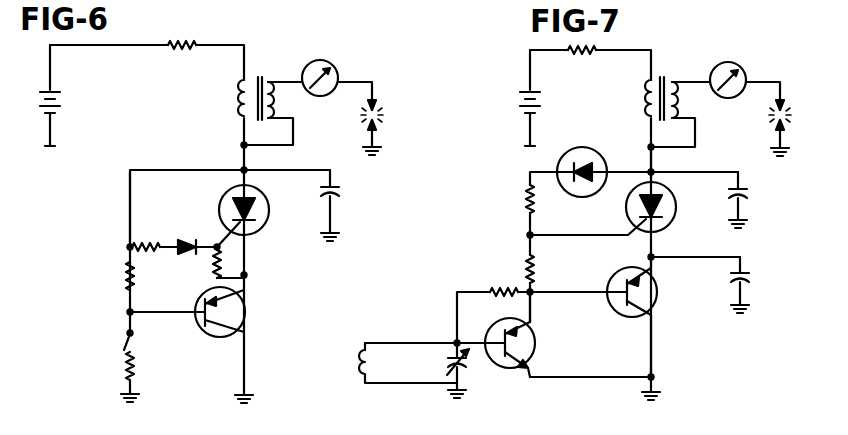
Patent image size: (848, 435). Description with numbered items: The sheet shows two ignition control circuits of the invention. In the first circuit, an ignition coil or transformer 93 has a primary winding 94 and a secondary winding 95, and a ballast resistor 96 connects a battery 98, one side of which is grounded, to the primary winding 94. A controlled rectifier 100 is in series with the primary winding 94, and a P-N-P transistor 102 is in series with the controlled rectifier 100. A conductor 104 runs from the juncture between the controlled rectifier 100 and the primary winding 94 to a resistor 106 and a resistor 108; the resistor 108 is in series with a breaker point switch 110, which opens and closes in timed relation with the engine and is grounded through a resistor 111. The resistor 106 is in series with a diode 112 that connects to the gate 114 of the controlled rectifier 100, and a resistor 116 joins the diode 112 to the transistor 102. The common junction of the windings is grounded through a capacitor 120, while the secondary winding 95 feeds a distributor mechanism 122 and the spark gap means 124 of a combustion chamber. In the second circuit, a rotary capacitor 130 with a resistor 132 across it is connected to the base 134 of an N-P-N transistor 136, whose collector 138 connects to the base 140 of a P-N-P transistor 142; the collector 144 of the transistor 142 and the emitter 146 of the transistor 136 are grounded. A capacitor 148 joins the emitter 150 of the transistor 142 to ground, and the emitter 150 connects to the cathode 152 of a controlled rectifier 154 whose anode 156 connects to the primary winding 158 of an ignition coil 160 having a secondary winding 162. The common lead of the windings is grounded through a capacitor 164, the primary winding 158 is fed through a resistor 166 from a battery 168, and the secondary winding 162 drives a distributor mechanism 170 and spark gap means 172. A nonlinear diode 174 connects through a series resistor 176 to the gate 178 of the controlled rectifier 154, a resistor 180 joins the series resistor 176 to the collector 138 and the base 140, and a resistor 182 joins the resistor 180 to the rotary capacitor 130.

In FIG. 6, the ignition coil 93 is at (260, 72).
In FIG. 6, the primary winding 94 is at (244, 100).
In FIG. 6, the secondary winding 95 is at (275, 100).
In FIG. 6, the ballast resistor 96 is at (181, 52).
In FIG. 6, the battery 98 is at (47, 108).
In FIG. 6, the controlled rectifier 100 is at (265, 204).
In FIG. 6, the transistor 102 is at (247, 310).
In FIG. 6, the conductor 104 is at (128, 200).
In FIG. 6, the resistor 106 is at (150, 243).
In FIG. 6, the resistor 108 is at (126, 273).
In FIG. 6, the breaker point switch 110 is at (125, 348).
In FIG. 6, the resistor 111 is at (126, 370).
In FIG. 6, the diode 112 is at (188, 238).
In FIG. 6, the gate 114 is at (246, 228).
In FIG. 6, the resistor 116 is at (211, 265).
In FIG. 6, the capacitor 120 is at (345, 192).
In FIG. 6, the distributor mechanism 122 is at (328, 66).
In FIG. 6, the spark gap means 124 is at (386, 115).
In FIG. 7, the rotary capacitor 130 is at (445, 363).
In FIG. 7, the resistor 132 is at (360, 366).
In FIG. 7, the base 134 is at (500, 320).
In FIG. 7, the transistor 136 is at (535, 356).
In FIG. 7, the collector 138 is at (525, 331).
In FIG. 7, the base 140 is at (620, 273).
In FIG. 7, the transistor 142 is at (657, 300).
In FIG. 7, the collector 144 is at (645, 313).
In FIG. 7, the emitter 146 is at (516, 366).
In FIG. 7, the capacitor 148 is at (753, 278).
In FIG. 7, the emitter 150 is at (652, 282).
In FIG. 7, the cathode 152 is at (661, 226).
In FIG. 7, the controlled rectifier 154 is at (678, 210).
In FIG. 7, the anode 156 is at (655, 171).
In FIG. 7, the primary winding 158 is at (648, 88).
In FIG. 7, the ignition coil 160 is at (663, 76).
In FIG. 7, the secondary winding 162 is at (679, 100).
In FIG. 7, the capacitor 164 is at (752, 193).
In FIG. 7, the resistor 166 is at (579, 54).
In FIG. 7, the battery 168 is at (522, 104).
In FIG. 7, the distributor mechanism 170 is at (741, 68).
In FIG. 7, the spark gap means 172 is at (792, 115).
In FIG. 7, the diode 174 is at (574, 147).
In FIG. 7, the series resistor 176 is at (526, 198).
In FIG. 7, the gate 178 is at (630, 236).
In FIG. 7, the resistor 180 is at (526, 258).
In FIG. 7, the resistor 182 is at (496, 290).